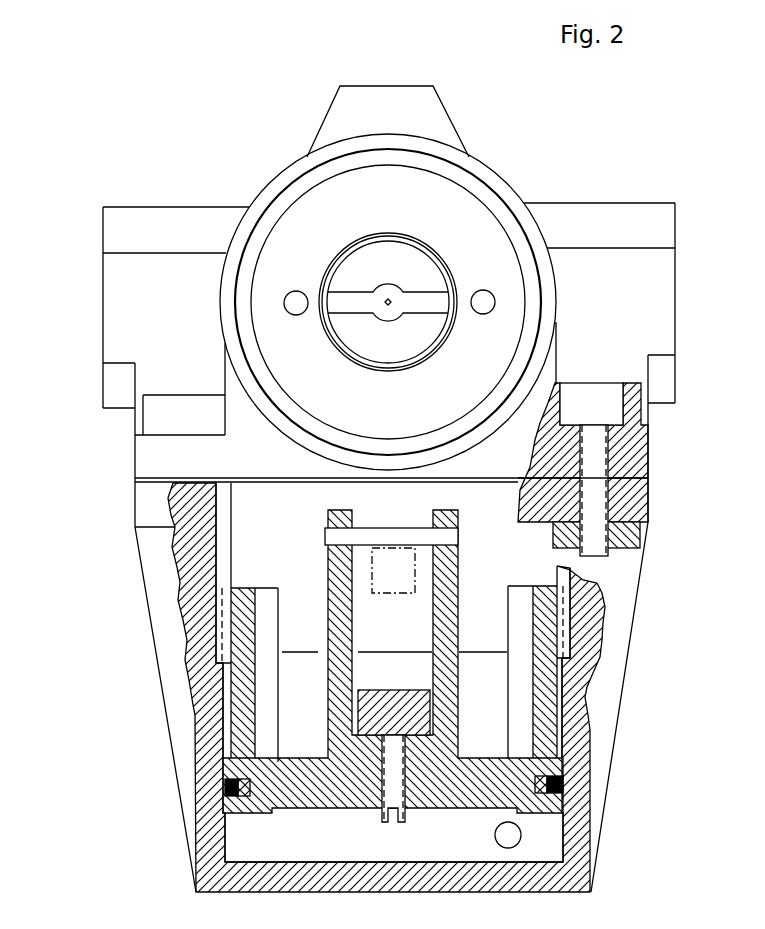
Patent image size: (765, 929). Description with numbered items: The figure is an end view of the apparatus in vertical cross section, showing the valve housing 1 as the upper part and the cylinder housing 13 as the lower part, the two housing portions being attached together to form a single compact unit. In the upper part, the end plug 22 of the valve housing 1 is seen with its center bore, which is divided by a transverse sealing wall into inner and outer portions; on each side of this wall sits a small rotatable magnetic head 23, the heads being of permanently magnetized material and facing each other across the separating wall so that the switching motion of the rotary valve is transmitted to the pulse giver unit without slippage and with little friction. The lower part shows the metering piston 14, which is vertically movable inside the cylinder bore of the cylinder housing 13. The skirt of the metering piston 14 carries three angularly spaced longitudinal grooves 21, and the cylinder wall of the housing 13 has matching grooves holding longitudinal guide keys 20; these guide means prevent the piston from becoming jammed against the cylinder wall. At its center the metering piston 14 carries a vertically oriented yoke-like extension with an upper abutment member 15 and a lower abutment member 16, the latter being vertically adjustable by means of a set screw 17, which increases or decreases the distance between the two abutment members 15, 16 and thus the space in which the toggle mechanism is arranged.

The valve housing 1 is at (138, 280).
The end plug 22 is at (305, 222).
The magnetic head 23 is at (375, 280).
The cylinder housing 13 is at (580, 766).
The metering piston 14 is at (545, 620).
The upper abutment member 15 is at (340, 541).
The lower abutment member 16 is at (377, 712).
The set screw 17 is at (383, 808).
The guide key 20 is at (222, 622).
The longitudinal groove 21 is at (223, 694).